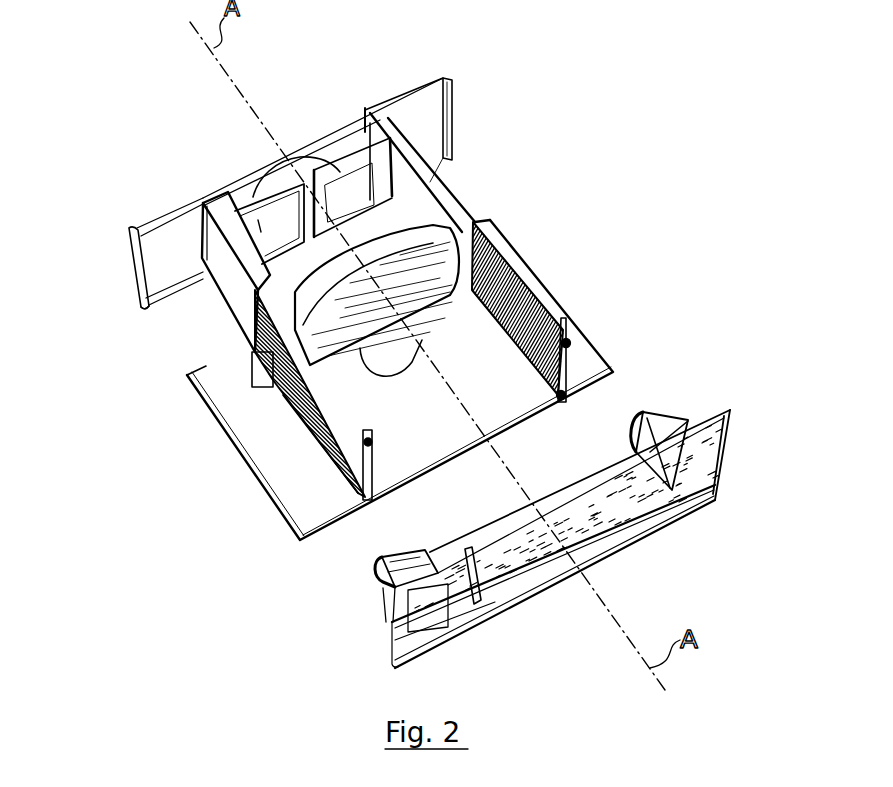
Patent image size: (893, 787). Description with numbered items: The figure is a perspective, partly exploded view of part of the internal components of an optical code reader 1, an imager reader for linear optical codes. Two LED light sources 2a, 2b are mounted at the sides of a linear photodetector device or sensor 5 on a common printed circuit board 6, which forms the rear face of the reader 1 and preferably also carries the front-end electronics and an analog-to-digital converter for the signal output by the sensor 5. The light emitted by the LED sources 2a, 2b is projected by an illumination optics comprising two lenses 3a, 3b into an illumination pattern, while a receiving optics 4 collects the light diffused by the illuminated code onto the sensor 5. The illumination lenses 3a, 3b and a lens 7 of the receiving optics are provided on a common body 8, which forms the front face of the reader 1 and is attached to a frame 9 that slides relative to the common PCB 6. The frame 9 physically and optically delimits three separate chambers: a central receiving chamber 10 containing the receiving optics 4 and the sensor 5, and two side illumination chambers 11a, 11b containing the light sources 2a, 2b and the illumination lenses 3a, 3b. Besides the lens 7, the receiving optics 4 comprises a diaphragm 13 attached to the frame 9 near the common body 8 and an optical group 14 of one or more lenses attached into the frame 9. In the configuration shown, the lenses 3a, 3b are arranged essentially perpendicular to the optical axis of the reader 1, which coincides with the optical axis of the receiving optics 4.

The optical code reader 1 is at (636, 160).
The LED light source 2a is at (677, 425).
The LED light source 2b is at (386, 582).
The lens of the illumination optics 3a is at (446, 80).
The lens of the illumination optics 3b is at (134, 228).
The receiving optics 4 is at (250, 165).
The linear photodetector device or sensor 5 is at (532, 566).
The common printed circuit board 6 is at (477, 627).
The lens of the receiving optics 7 is at (297, 163).
The common body 8 is at (128, 302).
The frame 9 is at (432, 180).
The central receiving chamber 10 is at (466, 350).
The side illumination chamber 11a is at (580, 364).
The side illumination chamber 11b is at (290, 432).
The diaphragm 13 is at (348, 168).
The optical group 14 is at (415, 245).